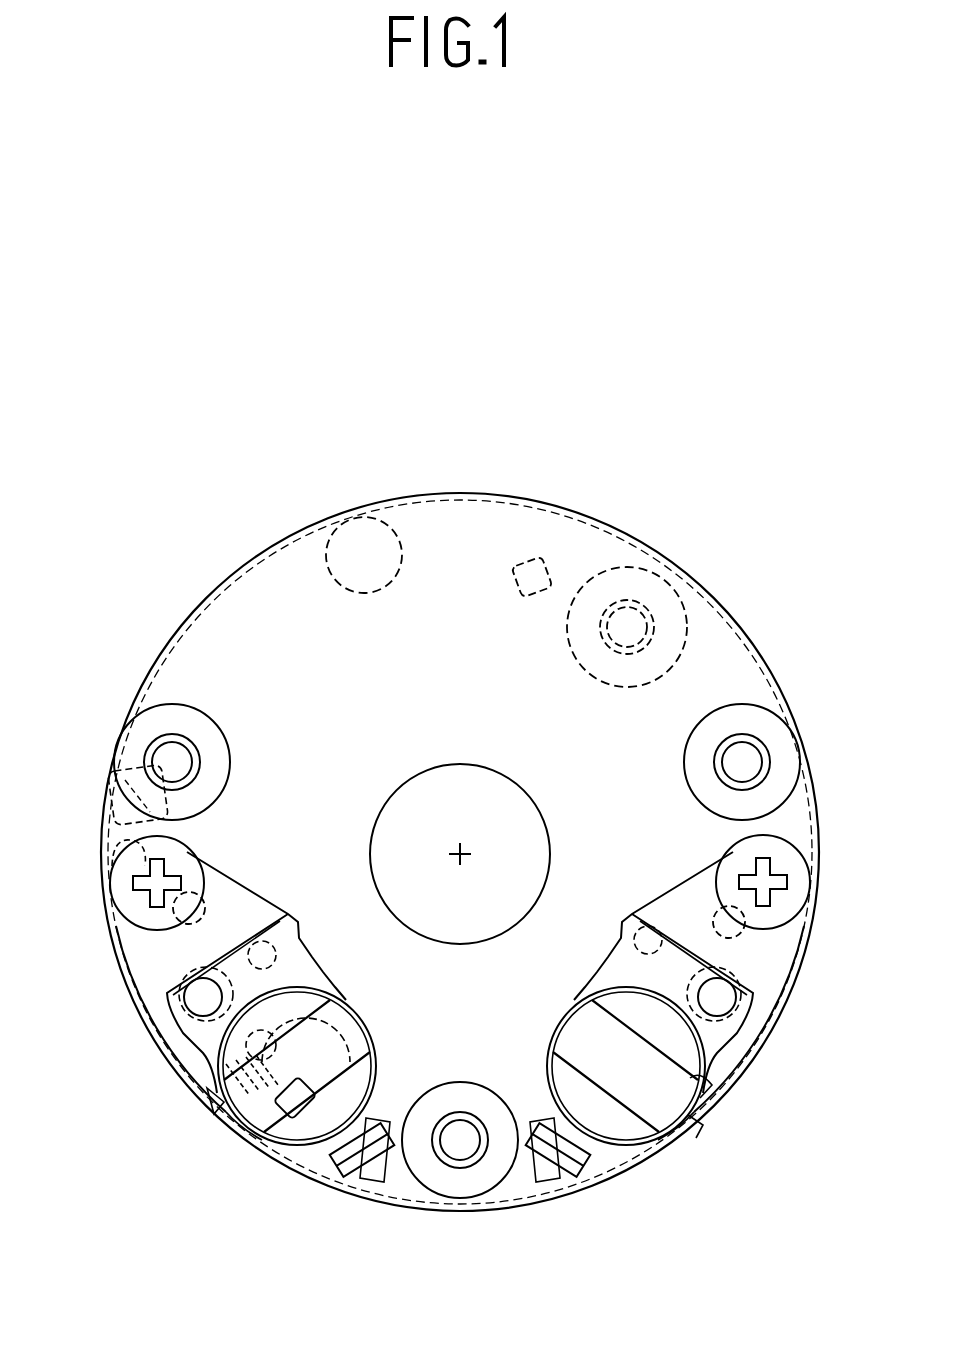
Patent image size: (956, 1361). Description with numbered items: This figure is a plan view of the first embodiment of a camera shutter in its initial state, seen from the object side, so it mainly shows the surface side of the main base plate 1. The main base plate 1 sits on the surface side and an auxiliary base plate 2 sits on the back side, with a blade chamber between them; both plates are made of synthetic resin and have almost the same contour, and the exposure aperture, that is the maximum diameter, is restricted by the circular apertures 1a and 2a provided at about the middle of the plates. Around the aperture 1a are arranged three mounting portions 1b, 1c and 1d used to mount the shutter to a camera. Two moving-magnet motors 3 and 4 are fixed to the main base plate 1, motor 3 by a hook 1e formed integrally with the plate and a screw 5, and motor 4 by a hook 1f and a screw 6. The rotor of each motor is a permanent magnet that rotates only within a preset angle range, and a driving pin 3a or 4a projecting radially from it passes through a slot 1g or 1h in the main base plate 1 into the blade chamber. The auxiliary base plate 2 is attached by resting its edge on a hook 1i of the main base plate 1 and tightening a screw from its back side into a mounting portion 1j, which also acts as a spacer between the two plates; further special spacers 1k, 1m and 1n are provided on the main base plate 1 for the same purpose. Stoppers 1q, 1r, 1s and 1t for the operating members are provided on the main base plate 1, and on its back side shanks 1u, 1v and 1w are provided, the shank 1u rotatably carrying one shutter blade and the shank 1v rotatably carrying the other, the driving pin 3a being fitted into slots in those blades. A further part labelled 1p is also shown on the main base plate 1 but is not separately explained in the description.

The main base plate 1 is at (243, 608).
The auxiliary base plate 2 is at (288, 583).
The circular aperture 1a is at (438, 821).
The circular aperture 2a is at (418, 787).
The mounting portion 1b is at (178, 722).
The mounting portion 1c is at (748, 726).
The mounting portion 1d is at (458, 1176).
The hook 1e is at (372, 1170).
The hook 1f is at (548, 1172).
The slot 1g is at (262, 950).
The slot 1h is at (642, 935).
The hook 1i is at (210, 1095).
The mounting portion 1j is at (647, 596).
The spacer 1k is at (112, 828).
The spacer 1m is at (375, 545).
The spacer 1n is at (715, 1088).
The terminal pin 1p is at (312, 1160).
The stopper 1q is at (135, 793).
The stopper 1r is at (548, 565).
The stopper 1s is at (700, 1128).
The stopper 1t is at (265, 1132).
The shank 1u is at (300, 1040).
The shank 1v is at (232, 872).
The shank 1w is at (715, 912).
The motor 3 is at (215, 1137).
The driving pin 3a is at (180, 1023).
The motor 4 is at (735, 1120).
The driving pin 4a is at (745, 968).
The screw 5 is at (118, 897).
The screw 6 is at (790, 897).